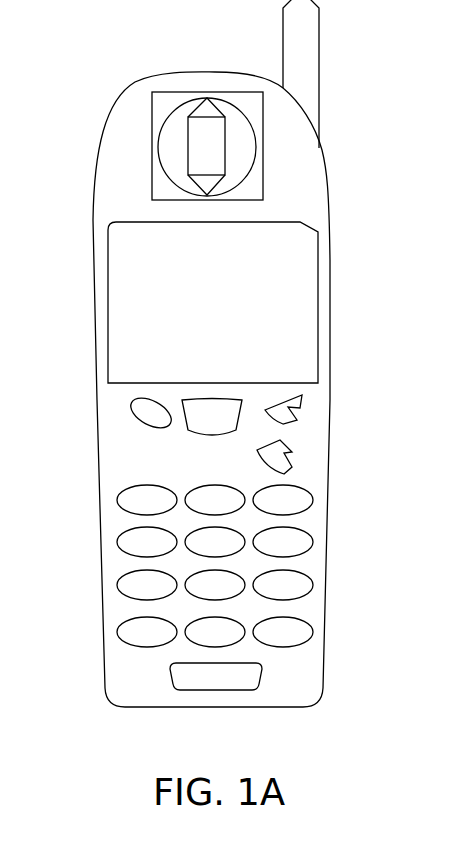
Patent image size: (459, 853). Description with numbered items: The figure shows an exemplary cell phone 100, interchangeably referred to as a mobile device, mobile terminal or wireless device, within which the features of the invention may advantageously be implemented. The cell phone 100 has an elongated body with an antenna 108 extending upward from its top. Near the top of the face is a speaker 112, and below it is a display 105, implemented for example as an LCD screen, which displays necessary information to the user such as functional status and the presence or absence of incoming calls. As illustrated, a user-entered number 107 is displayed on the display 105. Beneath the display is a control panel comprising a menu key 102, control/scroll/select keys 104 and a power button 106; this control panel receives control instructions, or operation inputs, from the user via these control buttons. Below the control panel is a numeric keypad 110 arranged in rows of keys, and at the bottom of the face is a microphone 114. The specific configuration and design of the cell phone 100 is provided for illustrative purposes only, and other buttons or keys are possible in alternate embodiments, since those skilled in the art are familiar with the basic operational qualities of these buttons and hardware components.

The cell phone 100 is at (142, 88).
The menu key 102 is at (190, 437).
The control/scroll/select keys 104 is at (287, 407).
The display 105 is at (305, 218).
The power button 106 is at (138, 413).
The user-entered number 107 is at (125, 286).
The antenna 108 is at (319, 33).
The numeric keypad 110 is at (310, 500).
The speaker 112 is at (198, 148).
The microphone 114 is at (210, 678).